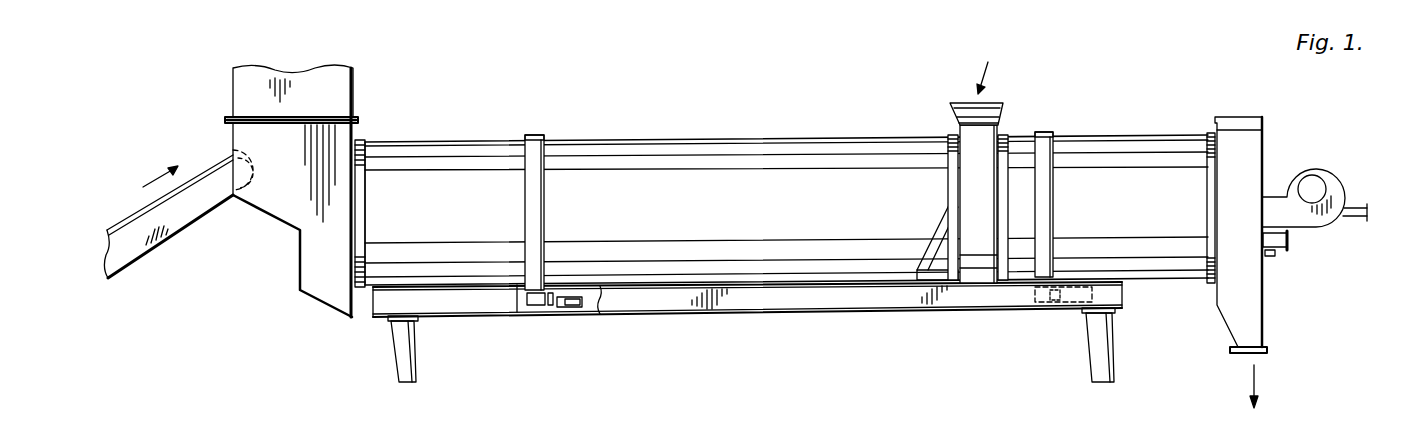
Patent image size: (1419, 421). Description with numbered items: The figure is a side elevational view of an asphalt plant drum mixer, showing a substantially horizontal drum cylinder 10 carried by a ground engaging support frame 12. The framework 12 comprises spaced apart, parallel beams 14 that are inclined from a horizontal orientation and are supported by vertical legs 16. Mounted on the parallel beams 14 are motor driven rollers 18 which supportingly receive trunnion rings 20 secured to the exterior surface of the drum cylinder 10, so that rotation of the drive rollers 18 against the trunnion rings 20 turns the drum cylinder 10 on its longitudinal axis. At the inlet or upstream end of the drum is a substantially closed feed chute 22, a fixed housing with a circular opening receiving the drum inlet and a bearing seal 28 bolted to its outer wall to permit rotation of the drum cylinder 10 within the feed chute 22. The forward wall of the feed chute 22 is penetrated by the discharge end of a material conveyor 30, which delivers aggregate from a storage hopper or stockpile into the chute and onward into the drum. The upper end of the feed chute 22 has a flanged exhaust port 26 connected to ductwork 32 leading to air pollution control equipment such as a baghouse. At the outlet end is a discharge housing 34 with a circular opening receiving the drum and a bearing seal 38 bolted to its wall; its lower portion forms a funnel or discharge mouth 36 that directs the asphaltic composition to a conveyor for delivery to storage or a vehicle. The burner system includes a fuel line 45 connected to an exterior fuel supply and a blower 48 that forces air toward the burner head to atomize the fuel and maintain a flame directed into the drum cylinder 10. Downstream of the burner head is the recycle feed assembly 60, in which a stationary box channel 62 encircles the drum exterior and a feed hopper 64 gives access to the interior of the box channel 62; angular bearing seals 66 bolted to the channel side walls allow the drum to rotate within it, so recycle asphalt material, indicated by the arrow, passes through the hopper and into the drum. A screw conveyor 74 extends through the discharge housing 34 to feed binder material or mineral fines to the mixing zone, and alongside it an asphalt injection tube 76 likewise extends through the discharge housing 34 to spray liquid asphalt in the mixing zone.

The drum cylinder 10 is at (752, 150).
The support frame 12 is at (898, 318).
The parallel beams 14 is at (786, 305).
The vertical legs 16 is at (405, 357).
The motor driven rollers 18 is at (537, 310).
The trunnion rings 20 is at (538, 135).
The feed chute 22 is at (262, 236).
The flanged exhaust port 26 is at (240, 142).
The bearing seal 28 is at (362, 152).
The material conveyor 30 is at (130, 257).
The ductwork 32 is at (348, 93).
The discharge housing 34 is at (1255, 137).
The discharge mouth 36 is at (1267, 351).
The bearing seal 38 is at (1210, 292).
The fuel line 45 is at (1342, 218).
The blower 48 is at (1321, 173).
The recycle feed assembly 60 is at (939, 92).
The box channel 62 is at (968, 133).
The feed hopper 64 is at (1000, 105).
The angular bearing seals 66 is at (950, 178).
The screw conveyor 74 is at (1289, 246).
The asphalt injection tube 76 is at (1270, 258).